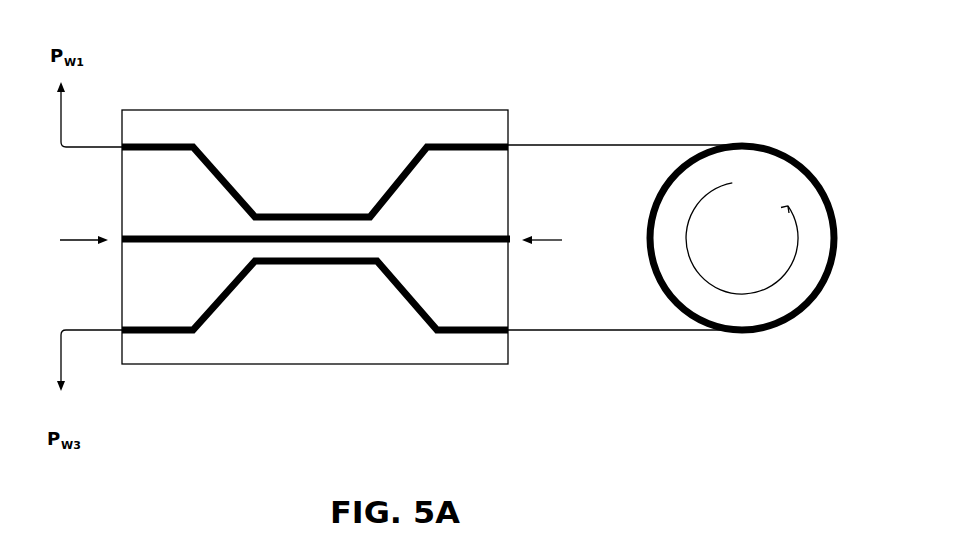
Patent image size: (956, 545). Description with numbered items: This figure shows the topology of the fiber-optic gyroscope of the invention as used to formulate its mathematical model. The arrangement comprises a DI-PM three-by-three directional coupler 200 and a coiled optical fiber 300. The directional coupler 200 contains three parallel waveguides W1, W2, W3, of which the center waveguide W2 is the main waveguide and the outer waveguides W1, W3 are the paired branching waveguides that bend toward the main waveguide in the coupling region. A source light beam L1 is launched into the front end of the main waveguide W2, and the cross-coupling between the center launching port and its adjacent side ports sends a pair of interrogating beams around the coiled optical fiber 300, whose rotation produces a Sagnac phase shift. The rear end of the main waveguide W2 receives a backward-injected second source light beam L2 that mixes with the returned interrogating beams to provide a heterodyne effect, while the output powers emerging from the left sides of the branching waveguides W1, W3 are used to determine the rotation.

The DI-PM 3×3 directional coupler 200 is at (300, 110).
The coiled optical fiber 300 is at (743, 142).
The first branching waveguide W1 is at (315, 171).
The main waveguide W2 is at (316, 224).
The second branching waveguide W3 is at (315, 295).
The source light beam L1 is at (68, 242).
The second source light beam L2 is at (557, 242).